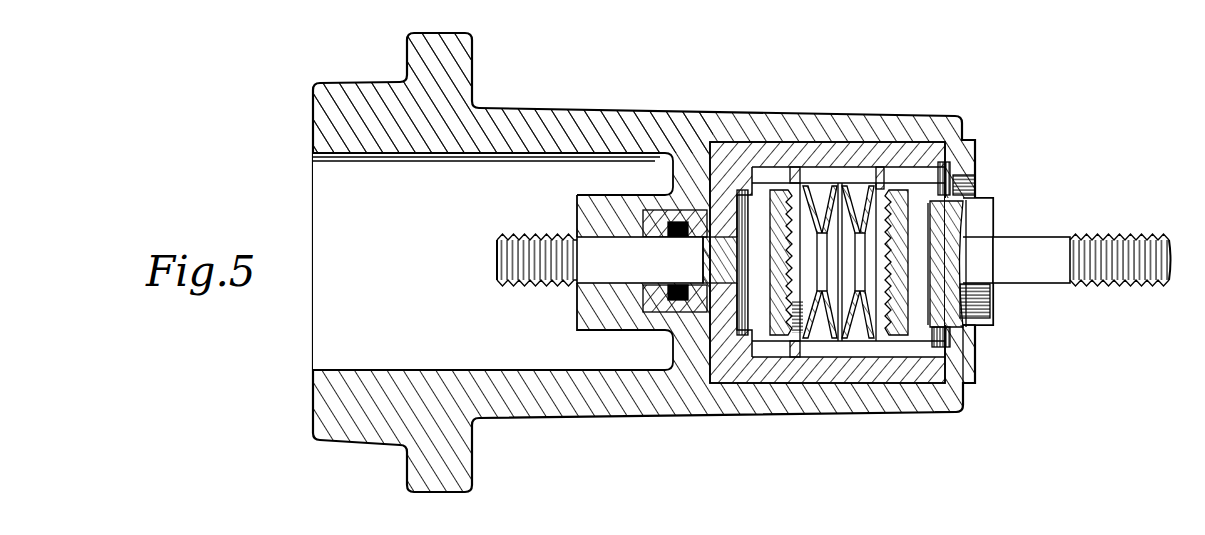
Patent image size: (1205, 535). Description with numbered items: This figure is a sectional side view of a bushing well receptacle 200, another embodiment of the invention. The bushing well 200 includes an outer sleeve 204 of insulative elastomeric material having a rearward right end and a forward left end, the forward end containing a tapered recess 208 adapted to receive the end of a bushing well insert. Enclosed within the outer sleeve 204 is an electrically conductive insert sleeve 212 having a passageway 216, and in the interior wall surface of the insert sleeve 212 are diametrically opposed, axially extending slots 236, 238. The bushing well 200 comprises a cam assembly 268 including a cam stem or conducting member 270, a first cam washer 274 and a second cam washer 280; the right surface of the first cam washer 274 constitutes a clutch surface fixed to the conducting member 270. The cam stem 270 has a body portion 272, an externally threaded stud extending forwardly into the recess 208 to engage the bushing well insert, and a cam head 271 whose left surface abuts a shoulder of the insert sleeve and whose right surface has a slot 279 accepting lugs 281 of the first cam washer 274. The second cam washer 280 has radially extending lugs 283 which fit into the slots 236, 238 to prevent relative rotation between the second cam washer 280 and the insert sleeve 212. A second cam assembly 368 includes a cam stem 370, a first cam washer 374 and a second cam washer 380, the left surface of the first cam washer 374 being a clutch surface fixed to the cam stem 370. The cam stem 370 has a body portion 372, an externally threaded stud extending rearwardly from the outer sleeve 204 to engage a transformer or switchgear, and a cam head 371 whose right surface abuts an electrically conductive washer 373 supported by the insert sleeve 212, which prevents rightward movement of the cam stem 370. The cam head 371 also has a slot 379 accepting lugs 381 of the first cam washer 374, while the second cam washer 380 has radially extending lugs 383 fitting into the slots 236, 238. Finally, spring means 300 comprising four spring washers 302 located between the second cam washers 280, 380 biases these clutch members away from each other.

The bushing well receptacle 200 is at (281, 113).
The outer sleeve 204 is at (325, 130).
The tapered recess 208 is at (322, 166).
The insert sleeve 212 is at (953, 163).
The passageway 216 is at (855, 338).
The slot 236 is at (822, 350).
The slot 238 is at (822, 178).
The cam assembly 268 is at (743, 351).
The cam stem 270 is at (520, 298).
The cam head 271 is at (672, 184).
The body portion 272 is at (548, 234).
The first cam washer 274 is at (770, 190).
The slot 279 is at (752, 253).
The second cam washer 280 is at (745, 318).
The lugs 281 is at (748, 188).
The lugs 283 is at (787, 343).
The spring means 300 is at (905, 263).
The spring washers 302 is at (848, 186).
The second cam assembly 368 is at (988, 183).
The cam stem 370 is at (1132, 230).
The cam head 371 is at (925, 190).
The body portion 372 is at (1051, 263).
The electrically conductive washer 373 is at (973, 342).
The first cam washer 374 is at (905, 340).
The slot 379 is at (925, 212).
The second cam washer 380 is at (882, 190).
The lugs 381 is at (965, 393).
The lugs 383 is at (880, 350).